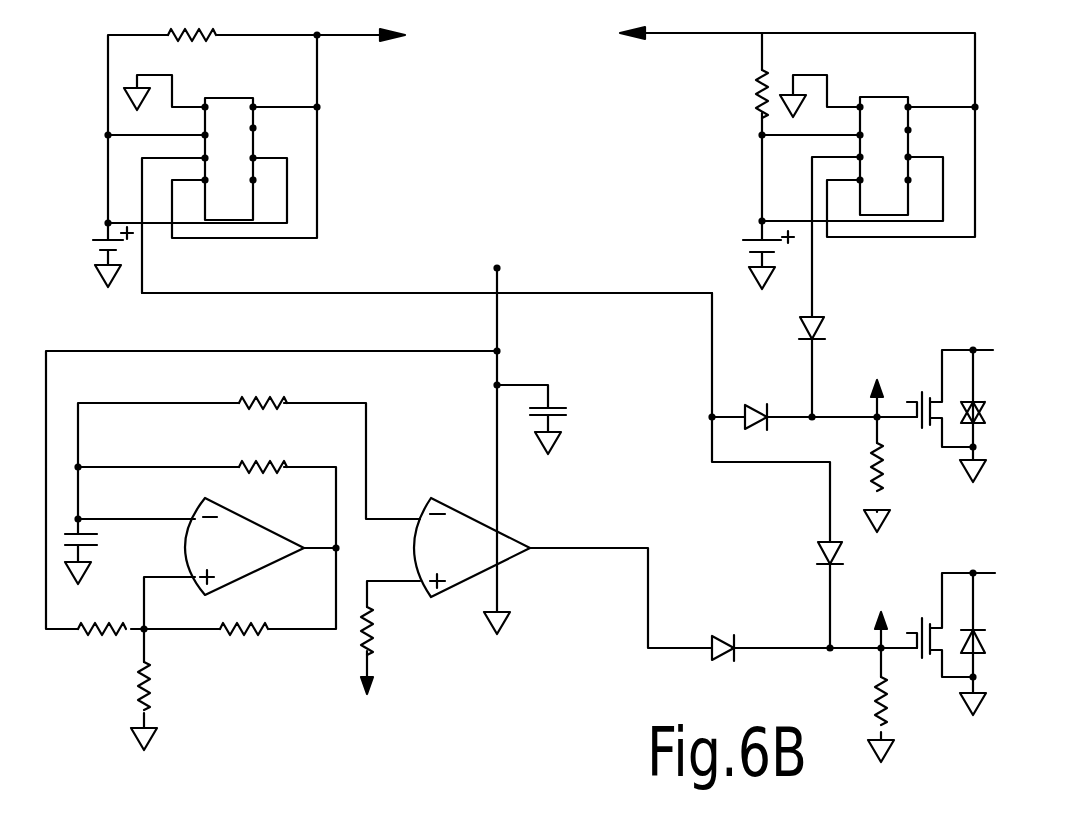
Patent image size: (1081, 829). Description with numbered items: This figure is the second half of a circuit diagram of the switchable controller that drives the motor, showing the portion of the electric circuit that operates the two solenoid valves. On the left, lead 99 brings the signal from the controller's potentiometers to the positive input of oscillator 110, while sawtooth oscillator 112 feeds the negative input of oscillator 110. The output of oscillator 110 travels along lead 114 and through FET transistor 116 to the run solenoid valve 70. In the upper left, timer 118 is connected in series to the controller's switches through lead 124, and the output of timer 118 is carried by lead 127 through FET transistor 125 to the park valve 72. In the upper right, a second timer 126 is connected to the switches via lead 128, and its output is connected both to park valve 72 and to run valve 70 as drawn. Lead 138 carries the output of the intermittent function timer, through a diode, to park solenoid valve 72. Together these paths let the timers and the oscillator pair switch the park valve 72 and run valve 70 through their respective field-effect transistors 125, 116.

The run solenoid valve 70 is at (1009, 578).
The park valve 72 is at (1011, 353).
The lead 99 is at (371, 657).
The oscillator 110 is at (443, 587).
The sawtooth oscillator 112 is at (246, 554).
The lead 114 is at (588, 548).
The FET transistor 116 is at (907, 651).
The timer 118 is at (228, 100).
The lead 124 is at (343, 35).
The FET transistor 125 is at (917, 423).
The timer 126 is at (887, 216).
The lead 127 is at (387, 293).
The lead 128 is at (715, 33).
The lead 138 is at (873, 405).